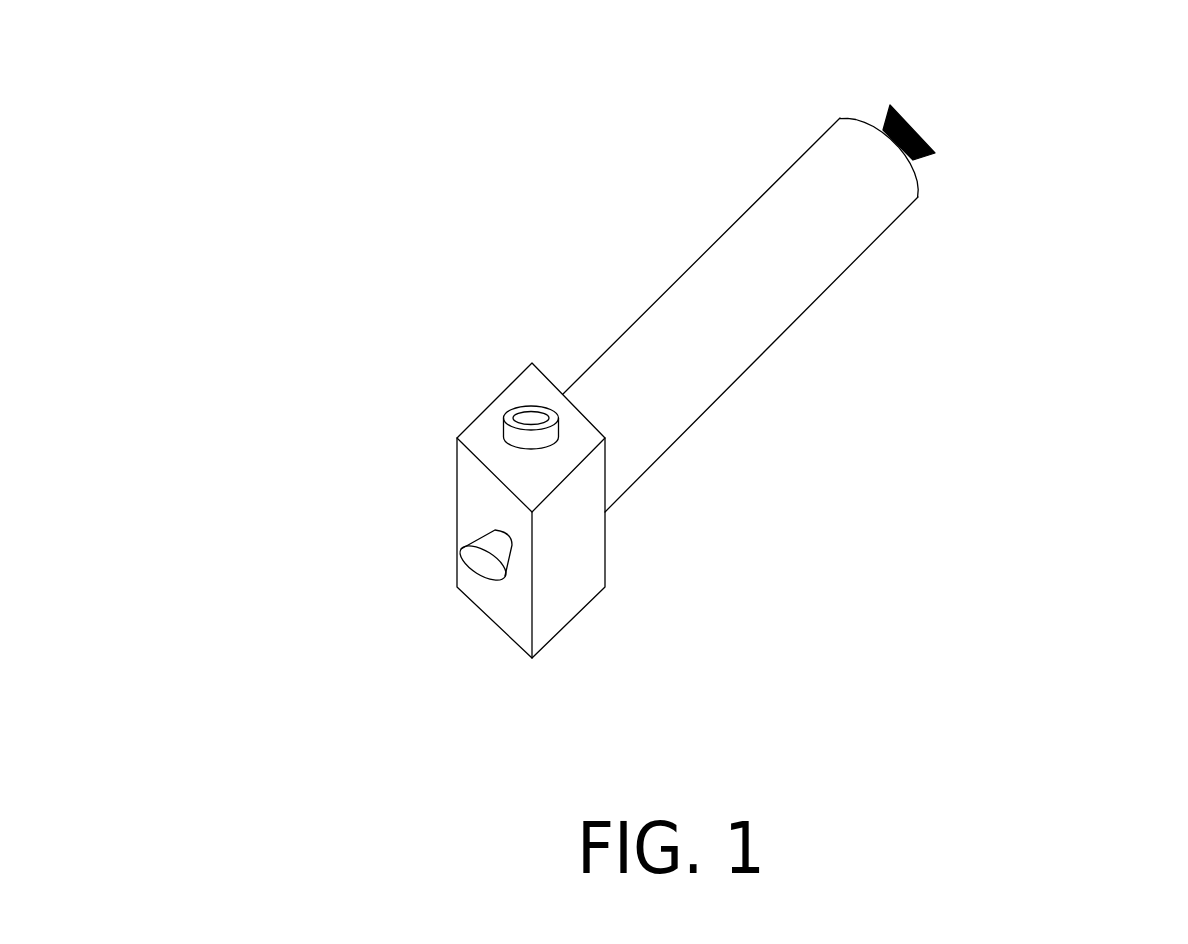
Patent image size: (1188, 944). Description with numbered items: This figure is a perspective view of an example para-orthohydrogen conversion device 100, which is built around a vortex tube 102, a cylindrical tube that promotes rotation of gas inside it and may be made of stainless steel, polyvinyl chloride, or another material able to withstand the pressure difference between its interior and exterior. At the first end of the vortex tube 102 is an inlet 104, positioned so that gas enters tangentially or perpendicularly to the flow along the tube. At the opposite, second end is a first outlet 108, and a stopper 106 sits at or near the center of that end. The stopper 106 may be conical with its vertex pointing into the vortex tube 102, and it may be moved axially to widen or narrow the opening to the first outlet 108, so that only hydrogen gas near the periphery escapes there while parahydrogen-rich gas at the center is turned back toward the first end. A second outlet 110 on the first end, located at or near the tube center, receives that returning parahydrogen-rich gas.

The para-orthohydrogen conversion device 100 is at (287, 112).
The vortex tube 102 is at (727, 230).
The inlet 104 is at (503, 418).
The stopper 106 is at (935, 153).
The first outlet 108 is at (840, 118).
The second outlet 110 is at (500, 582).